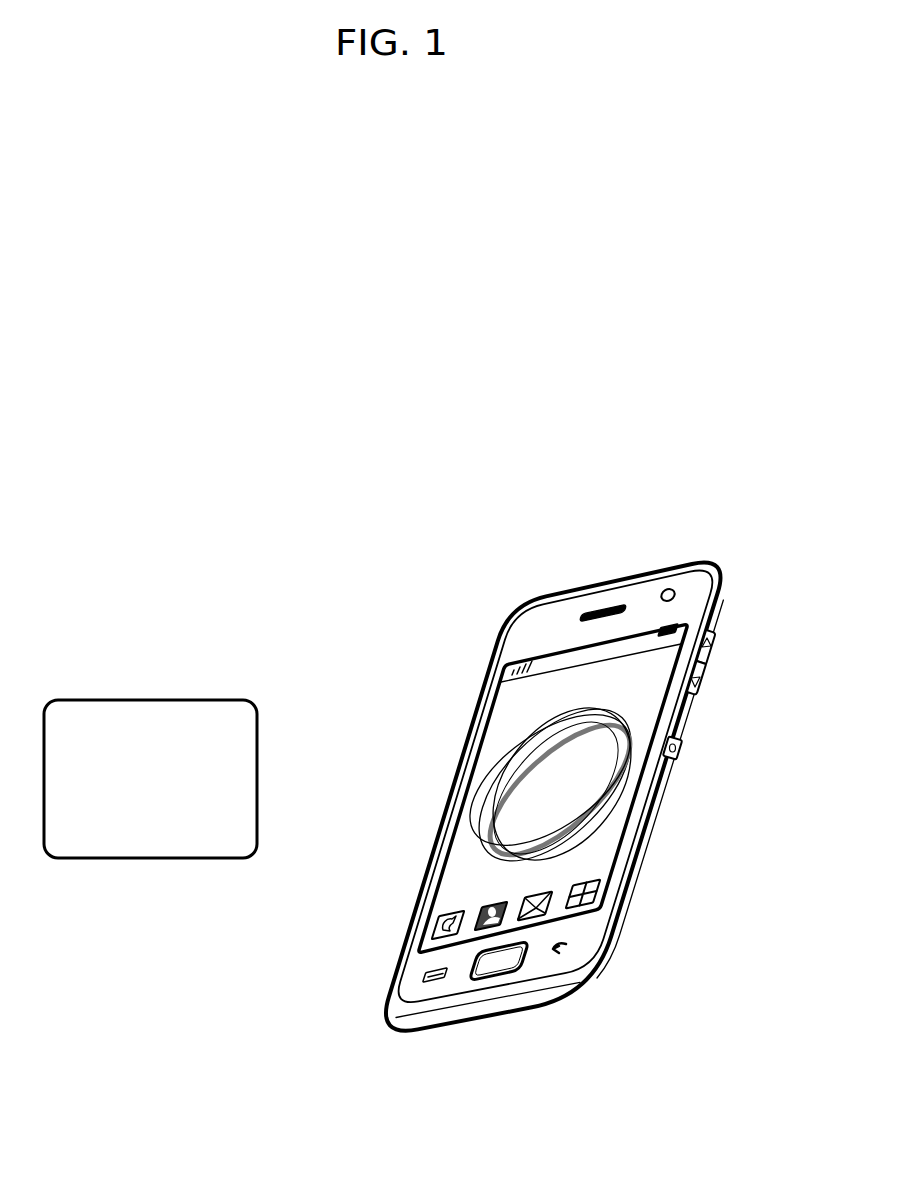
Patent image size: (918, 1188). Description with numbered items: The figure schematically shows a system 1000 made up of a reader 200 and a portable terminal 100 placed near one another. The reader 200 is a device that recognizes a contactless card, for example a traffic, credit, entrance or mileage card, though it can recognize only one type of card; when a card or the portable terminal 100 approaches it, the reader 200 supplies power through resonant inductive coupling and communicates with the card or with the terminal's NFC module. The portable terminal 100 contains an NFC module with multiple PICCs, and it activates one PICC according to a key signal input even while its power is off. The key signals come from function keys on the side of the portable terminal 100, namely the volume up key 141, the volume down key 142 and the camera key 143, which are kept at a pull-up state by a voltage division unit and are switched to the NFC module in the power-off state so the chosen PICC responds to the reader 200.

The system 1000 is at (407, 413).
The portable terminal 100 is at (587, 764).
The reader 200 is at (168, 687).
The volume up key 141 is at (715, 640).
The volume down key 142 is at (699, 681).
The camera key 143 is at (682, 750).